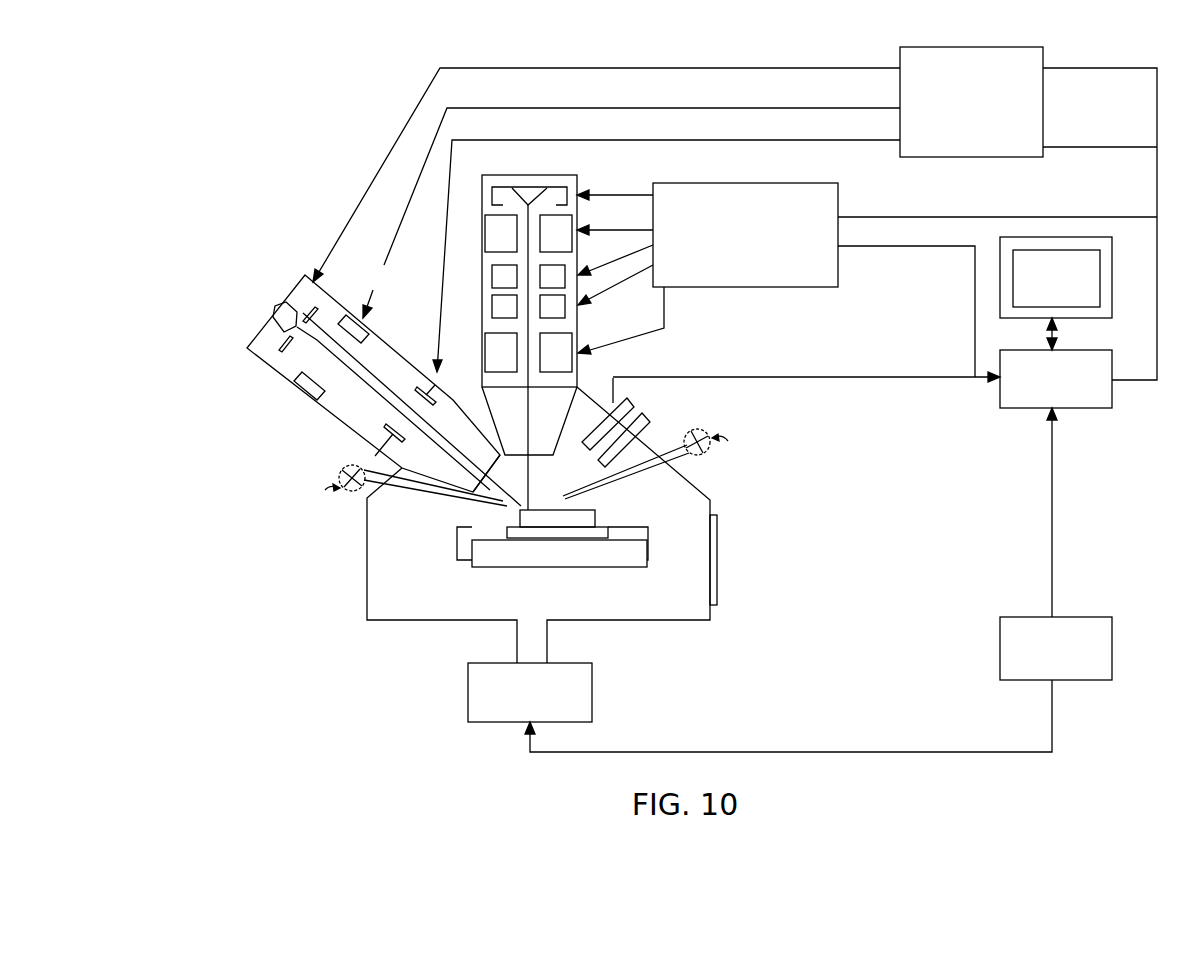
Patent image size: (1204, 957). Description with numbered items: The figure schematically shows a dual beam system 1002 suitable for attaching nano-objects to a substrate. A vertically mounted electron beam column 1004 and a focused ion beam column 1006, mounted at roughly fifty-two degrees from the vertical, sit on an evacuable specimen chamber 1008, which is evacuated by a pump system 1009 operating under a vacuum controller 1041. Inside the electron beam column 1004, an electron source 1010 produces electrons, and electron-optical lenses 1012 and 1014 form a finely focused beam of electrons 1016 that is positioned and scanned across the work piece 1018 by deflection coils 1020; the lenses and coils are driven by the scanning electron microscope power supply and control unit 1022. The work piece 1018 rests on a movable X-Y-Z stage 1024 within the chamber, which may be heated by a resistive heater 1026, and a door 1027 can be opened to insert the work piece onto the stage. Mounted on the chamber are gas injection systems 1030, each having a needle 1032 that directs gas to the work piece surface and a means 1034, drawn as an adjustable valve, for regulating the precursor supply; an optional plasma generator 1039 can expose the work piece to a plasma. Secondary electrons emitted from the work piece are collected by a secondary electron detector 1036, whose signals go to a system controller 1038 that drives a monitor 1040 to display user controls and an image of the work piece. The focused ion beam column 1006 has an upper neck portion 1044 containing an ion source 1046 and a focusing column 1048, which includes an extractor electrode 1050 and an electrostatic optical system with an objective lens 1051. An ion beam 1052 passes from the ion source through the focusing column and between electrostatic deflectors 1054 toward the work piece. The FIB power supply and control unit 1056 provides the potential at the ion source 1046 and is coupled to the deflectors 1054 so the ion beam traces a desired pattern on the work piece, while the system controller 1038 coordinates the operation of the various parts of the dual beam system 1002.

The dual beam system 1002 is at (327, 93).
The electron beam column 1004 is at (550, 330).
The focused ion beam column 1006 is at (332, 372).
The specimen chamber 1008 is at (367, 597).
The pump system 1009 is at (594, 692).
The electron source 1010 is at (518, 187).
The electron-optical lens 1012 is at (568, 215).
The electron-optical lens 1014 is at (566, 335).
The beam of electrons 1016 is at (530, 485).
The work piece 1018 is at (596, 512).
The deflection coils 1020 is at (492, 286).
The scanning electron microscope power supply and control unit 1022 is at (842, 210).
The movable stage 1024 is at (648, 538).
The resistive heater 1026 is at (608, 528).
The door 1027 is at (718, 520).
The gas injection system 1030 is at (320, 505).
The needle 1032 is at (434, 498).
The means for regulating supply of precursor material 1034 is at (345, 467).
The secondary electron detector 1036 is at (628, 403).
The system controller 1038 is at (1025, 408).
The plasma generator 1039 is at (643, 420).
The monitor 1040 is at (1056, 277).
The vacuum controller 1041 is at (1112, 633).
The upper neck portion 1044 is at (382, 333).
The ion source 1046 is at (272, 323).
The focusing column 1048 is at (340, 402).
The extractor electrode 1050 is at (319, 308).
The objective lens 1051 is at (311, 398).
The ion beam 1052 is at (473, 480).
The electrostatic deflectors 1054 is at (388, 430).
The FIB power supply and control unit 1056 is at (1045, 90).